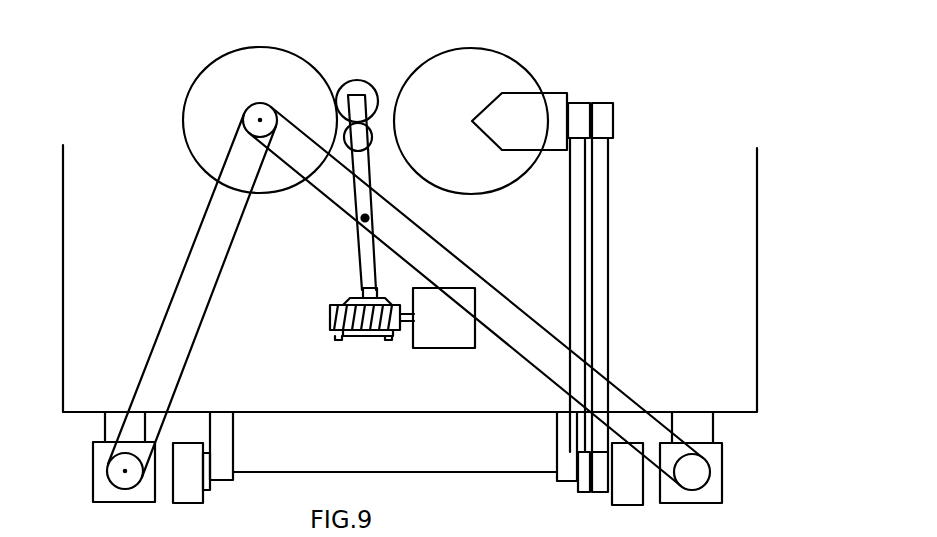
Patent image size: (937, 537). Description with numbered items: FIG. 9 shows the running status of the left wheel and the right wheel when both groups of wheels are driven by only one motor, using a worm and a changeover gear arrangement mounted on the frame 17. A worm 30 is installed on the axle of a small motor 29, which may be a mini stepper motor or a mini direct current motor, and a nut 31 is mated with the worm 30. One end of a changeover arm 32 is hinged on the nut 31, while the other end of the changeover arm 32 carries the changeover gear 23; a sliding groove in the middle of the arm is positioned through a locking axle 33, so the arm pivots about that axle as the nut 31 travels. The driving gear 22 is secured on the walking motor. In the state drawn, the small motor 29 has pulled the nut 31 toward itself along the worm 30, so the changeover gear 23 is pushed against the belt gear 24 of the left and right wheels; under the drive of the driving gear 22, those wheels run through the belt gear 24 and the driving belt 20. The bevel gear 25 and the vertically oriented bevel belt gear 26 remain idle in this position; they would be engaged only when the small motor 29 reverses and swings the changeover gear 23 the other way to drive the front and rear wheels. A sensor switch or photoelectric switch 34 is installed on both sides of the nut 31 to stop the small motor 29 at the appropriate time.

The frame 17 is at (713, 412).
The driving belt 20 is at (614, 102).
The driving gear 22 is at (372, 140).
The changeover gear 23 is at (343, 82).
The belt gear 24 is at (192, 86).
The bevel gear 25 is at (517, 66).
The bevel belt gear 26 is at (571, 103).
The small motor 29 is at (447, 327).
The worm 30 is at (353, 297).
The nut 31 is at (360, 292).
The changeover arm 32 is at (338, 86).
The locking axle 33 is at (365, 218).
The photoelectric switch 34 is at (333, 306).